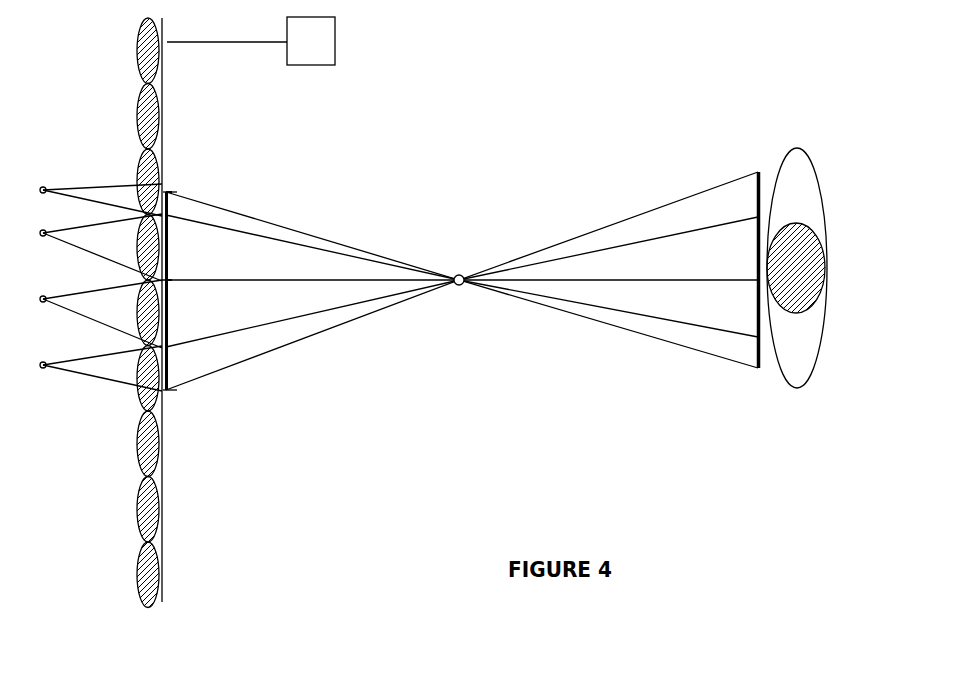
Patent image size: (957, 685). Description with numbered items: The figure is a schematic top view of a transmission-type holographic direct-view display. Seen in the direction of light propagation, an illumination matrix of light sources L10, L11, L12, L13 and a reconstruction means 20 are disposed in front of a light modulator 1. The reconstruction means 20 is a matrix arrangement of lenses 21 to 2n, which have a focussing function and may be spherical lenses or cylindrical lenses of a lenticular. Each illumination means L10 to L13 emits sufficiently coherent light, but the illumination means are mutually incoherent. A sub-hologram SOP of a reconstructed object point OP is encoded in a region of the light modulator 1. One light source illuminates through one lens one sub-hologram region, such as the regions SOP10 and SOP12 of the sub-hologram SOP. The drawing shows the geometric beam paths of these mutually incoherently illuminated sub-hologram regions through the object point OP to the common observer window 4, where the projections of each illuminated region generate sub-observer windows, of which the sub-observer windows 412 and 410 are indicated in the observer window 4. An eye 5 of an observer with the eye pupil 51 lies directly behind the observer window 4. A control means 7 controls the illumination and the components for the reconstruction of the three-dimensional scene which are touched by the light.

The light modulator 1 is at (175, 601).
The reconstruction means 20 is at (117, 330).
The lens 21 is at (132, 51).
The lens 2n is at (107, 618).
The control means 7 is at (251, 41).
The illumination means L10 is at (96, 188).
The illumination means L11 is at (96, 243).
The illumination means L12 is at (96, 309).
The illumination means L13 is at (96, 363).
The sub-hologram SOP is at (210, 360).
The sub-hologram region SOP10 is at (180, 197).
The sub-hologram region SOP12 is at (194, 303).
The object point OP is at (460, 281).
The observer window 4 is at (754, 301).
The sub-observer window 410 is at (745, 362).
The sub-observer window 412 is at (738, 239).
The eye 5 is at (797, 289).
The eye pupil 51 is at (796, 282).